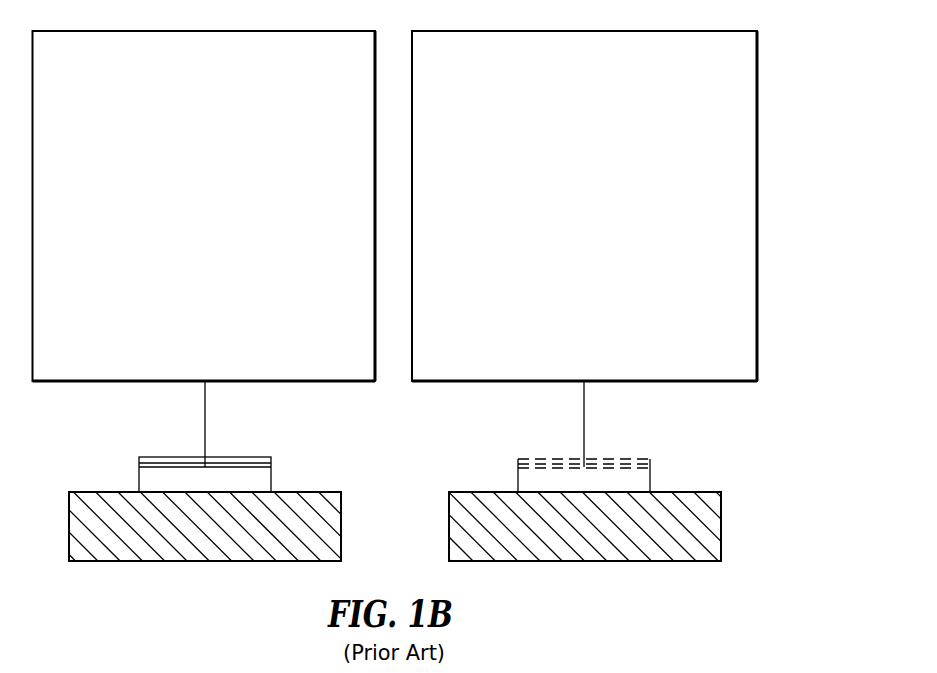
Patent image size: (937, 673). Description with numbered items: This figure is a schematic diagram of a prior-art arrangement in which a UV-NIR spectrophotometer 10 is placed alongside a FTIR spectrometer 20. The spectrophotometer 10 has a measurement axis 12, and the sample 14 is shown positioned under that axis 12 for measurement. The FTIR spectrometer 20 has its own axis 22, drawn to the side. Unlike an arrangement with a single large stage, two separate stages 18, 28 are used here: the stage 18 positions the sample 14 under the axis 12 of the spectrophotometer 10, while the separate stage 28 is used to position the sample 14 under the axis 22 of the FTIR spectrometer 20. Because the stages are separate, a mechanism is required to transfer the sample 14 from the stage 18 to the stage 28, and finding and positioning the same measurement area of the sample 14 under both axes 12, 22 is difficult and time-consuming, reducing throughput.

The UV-NIR spectrophotometer 10 is at (215, 213).
The axis 12 is at (206, 425).
The sample 14 is at (271, 482).
The stage 18 is at (341, 543).
The FTIR spectrometer 20 is at (595, 220).
The axis 22 is at (585, 425).
The stage 28 is at (721, 543).